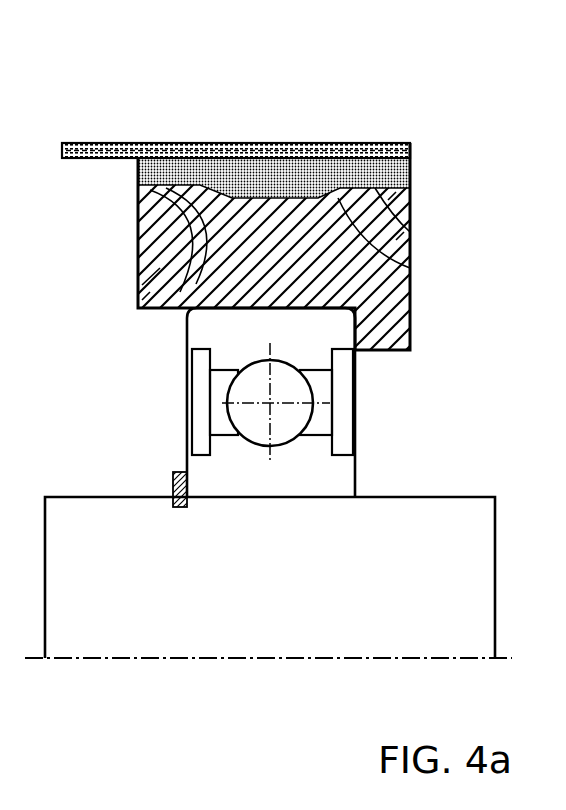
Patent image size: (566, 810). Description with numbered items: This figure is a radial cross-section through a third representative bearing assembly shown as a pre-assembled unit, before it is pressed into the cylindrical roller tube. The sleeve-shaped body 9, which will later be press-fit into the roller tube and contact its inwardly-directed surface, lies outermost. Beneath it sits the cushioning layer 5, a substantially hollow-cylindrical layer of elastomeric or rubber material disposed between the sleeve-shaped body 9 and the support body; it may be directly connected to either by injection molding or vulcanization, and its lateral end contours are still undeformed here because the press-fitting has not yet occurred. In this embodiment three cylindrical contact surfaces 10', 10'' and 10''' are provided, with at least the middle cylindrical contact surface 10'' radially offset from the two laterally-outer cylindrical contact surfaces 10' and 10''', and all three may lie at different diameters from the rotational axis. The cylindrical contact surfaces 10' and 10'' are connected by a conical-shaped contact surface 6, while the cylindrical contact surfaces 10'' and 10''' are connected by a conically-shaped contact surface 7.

The sleeve-shaped body 9 is at (94, 142).
The cushioning layer 5 is at (410, 172).
The conical-shaped contact surface 6 is at (138, 262).
The conically-shaped contact surface 7 is at (410, 268).
The cylindrical contact surface 10' is at (125, 240).
The middle cylindrical contact surface 10'' is at (101, 304).
The cylindrical contact surface 10''' is at (452, 228).